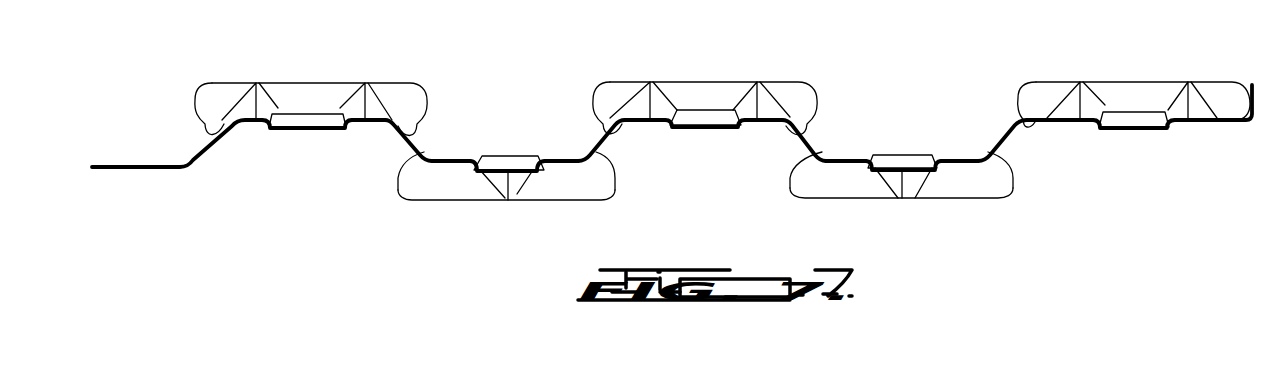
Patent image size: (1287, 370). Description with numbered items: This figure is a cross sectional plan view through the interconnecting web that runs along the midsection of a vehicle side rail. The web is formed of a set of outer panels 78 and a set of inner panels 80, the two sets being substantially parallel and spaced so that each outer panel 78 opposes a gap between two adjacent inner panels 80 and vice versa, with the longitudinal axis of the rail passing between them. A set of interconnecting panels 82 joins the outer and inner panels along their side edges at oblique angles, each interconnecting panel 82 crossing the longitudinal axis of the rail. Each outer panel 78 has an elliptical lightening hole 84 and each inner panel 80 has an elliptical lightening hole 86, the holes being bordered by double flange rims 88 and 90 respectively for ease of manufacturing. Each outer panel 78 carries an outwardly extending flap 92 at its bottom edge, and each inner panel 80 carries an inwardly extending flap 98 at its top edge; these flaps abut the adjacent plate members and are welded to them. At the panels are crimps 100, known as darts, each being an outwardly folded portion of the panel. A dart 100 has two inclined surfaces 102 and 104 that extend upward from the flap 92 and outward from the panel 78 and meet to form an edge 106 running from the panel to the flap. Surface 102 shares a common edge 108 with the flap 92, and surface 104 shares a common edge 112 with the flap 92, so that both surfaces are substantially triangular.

The outer panel 78 is at (442, 170).
The inner panel 80 is at (350, 108).
The interconnecting panel 82 is at (795, 137).
The lightening hole 84 is at (497, 157).
The lightening hole 86 is at (309, 118).
The double flange rim 88 is at (473, 170).
The double flange rim 90 is at (272, 130).
The outwardly extending flap 92 is at (593, 200).
The inwardly extending flap 98 is at (223, 97).
The crimp 100 is at (262, 112).
The surface 102 is at (508, 196).
The surface 104 is at (528, 175).
The edge 106 is at (512, 176).
The common edge 108 is at (495, 170).
The common edge 112 is at (535, 176).